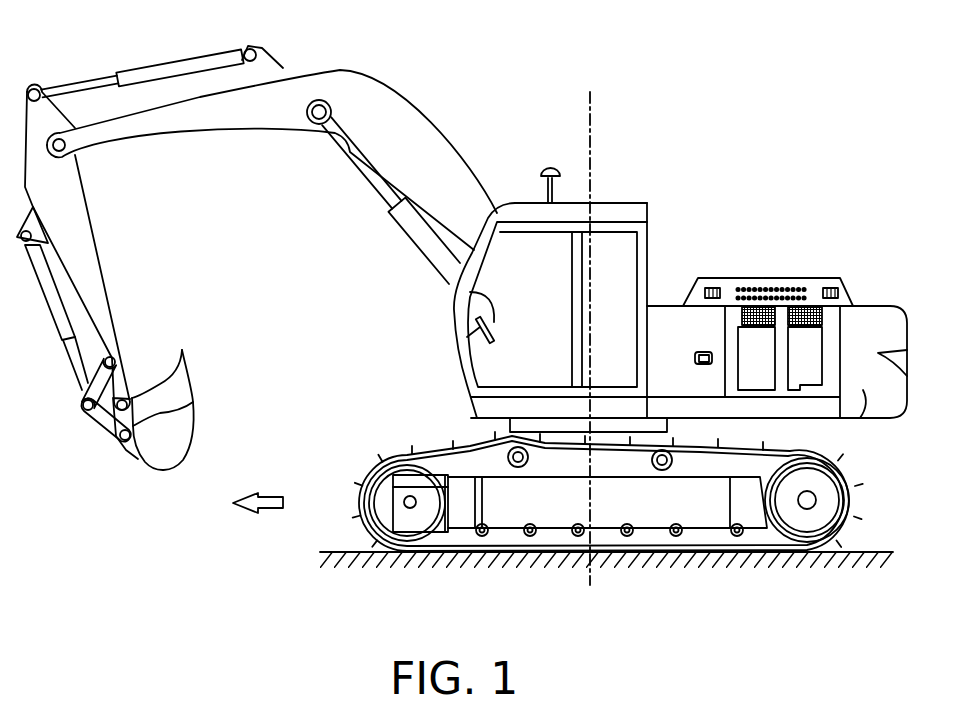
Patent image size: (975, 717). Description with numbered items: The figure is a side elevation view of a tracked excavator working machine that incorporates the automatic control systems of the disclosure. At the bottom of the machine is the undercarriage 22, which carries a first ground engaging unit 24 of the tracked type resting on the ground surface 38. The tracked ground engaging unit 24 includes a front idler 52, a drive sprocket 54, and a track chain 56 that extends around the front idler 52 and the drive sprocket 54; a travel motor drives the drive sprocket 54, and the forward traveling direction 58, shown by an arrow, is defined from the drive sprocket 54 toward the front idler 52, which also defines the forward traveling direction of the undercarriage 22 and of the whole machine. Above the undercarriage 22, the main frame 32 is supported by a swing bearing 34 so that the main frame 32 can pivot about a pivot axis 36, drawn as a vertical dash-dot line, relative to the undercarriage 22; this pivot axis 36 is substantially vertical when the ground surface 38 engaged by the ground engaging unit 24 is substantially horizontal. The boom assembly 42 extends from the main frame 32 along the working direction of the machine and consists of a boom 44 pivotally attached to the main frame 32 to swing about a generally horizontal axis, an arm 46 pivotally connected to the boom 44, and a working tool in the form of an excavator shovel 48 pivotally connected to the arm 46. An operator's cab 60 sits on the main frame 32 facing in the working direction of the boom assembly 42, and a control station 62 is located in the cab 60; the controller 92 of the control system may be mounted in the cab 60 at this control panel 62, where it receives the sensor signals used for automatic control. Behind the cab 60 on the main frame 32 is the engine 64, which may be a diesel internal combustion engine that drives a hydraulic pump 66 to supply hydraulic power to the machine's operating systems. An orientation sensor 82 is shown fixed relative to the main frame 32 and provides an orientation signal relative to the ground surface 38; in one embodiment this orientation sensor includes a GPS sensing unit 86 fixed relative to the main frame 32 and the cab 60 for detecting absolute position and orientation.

The undercarriage 22 is at (485, 335).
The first ground engaging unit 24 is at (873, 511).
The main frame 32 is at (818, 409).
The swing bearing 34 is at (510, 426).
The pivot axis 36 is at (596, 108).
The ground surface 38 is at (869, 550).
The boom assembly 42 is at (425, 90).
The boom 44 is at (312, 133).
The arm 46 is at (80, 238).
The excavator shovel 48 is at (165, 462).
The front idler 52 is at (385, 489).
The drive sprocket 54 is at (777, 529).
The track chain 56 is at (502, 544).
The forward traveling direction 58 is at (266, 492).
The operator's cab 60 is at (617, 217).
The control station 62 is at (411, 308).
The controller 92 is at (470, 292).
The engine 64 is at (846, 288).
The hydraulic pump 66 is at (694, 358).
The orientation sensor 82 is at (506, 161).
The GPS sensing unit 86 is at (550, 166).